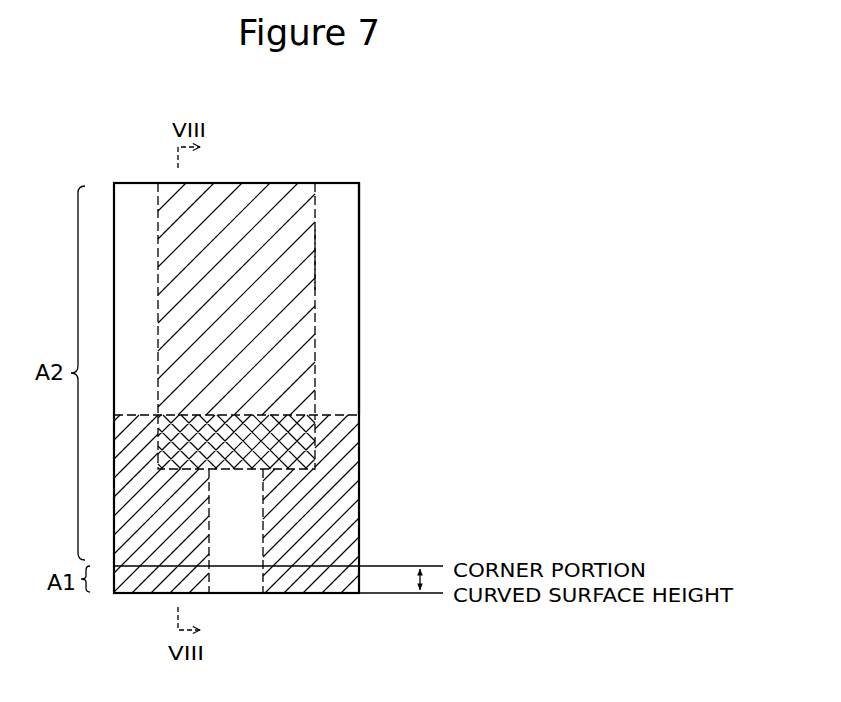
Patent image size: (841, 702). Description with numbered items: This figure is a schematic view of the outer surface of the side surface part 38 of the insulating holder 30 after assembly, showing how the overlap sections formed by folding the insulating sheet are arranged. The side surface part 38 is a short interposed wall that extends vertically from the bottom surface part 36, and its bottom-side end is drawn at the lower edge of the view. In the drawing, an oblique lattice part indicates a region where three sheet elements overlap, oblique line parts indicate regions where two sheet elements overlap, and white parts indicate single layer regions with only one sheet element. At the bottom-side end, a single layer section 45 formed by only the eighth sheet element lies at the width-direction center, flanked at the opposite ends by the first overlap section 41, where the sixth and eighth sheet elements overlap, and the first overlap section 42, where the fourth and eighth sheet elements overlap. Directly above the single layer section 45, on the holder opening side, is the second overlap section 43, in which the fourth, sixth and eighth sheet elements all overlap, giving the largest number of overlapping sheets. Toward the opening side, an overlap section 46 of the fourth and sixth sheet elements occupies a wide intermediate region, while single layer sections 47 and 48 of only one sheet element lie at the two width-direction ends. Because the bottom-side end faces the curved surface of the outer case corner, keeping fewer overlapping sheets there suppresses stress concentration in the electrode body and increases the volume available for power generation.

The insulating holder 30 is at (357, 166).
The single layer section 48 is at (135, 195).
The overlap section 46 is at (268, 210).
The single layer section 47 is at (343, 297).
The side surface part 38 is at (327, 258).
The second overlap section 43 is at (268, 422).
The first overlap section 41 is at (165, 512).
The first overlap section 42 is at (316, 530).
The single layer section 45 is at (237, 542).
The bottom surface part 36 is at (187, 594).